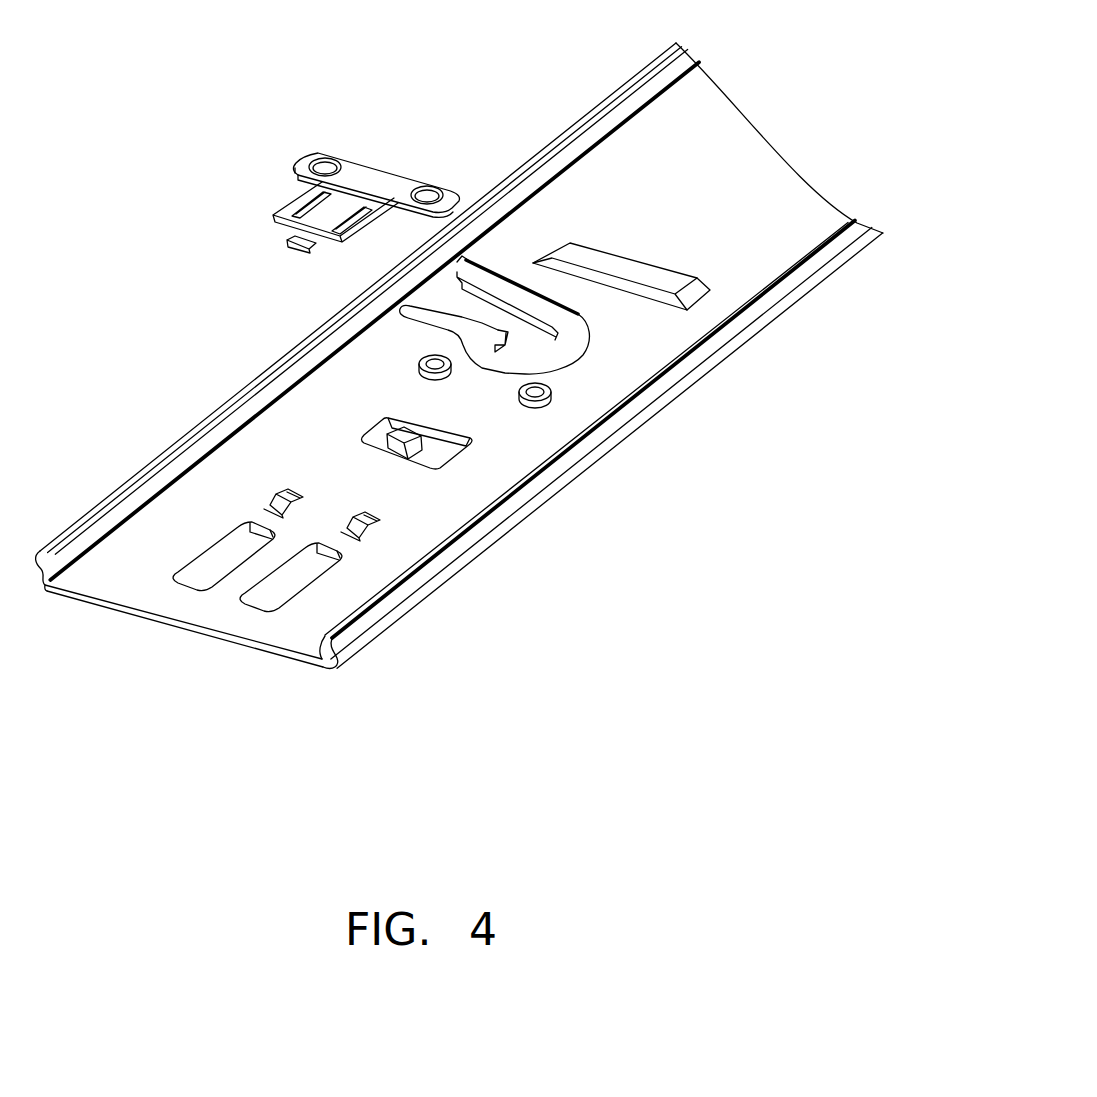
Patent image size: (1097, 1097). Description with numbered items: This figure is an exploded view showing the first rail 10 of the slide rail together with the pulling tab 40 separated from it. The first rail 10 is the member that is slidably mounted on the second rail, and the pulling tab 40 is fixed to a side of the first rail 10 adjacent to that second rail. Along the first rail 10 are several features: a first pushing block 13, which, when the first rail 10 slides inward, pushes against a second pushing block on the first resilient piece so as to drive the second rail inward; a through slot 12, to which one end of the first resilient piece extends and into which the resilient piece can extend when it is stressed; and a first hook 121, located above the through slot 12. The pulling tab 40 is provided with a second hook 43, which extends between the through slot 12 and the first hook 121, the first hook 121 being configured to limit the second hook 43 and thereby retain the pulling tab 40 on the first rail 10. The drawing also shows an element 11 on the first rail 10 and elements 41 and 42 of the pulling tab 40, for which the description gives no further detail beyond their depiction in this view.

The first rail 10 is at (283, 625).
The positioning post 11 is at (548, 393).
The through slot 12 is at (452, 445).
The first hook 121 is at (405, 440).
The first pushing block 13 is at (275, 495).
The pulling tab 40 is at (400, 178).
The bent tab 41 is at (297, 213).
The through hole 42 is at (320, 167).
The second hook 43 is at (290, 241).